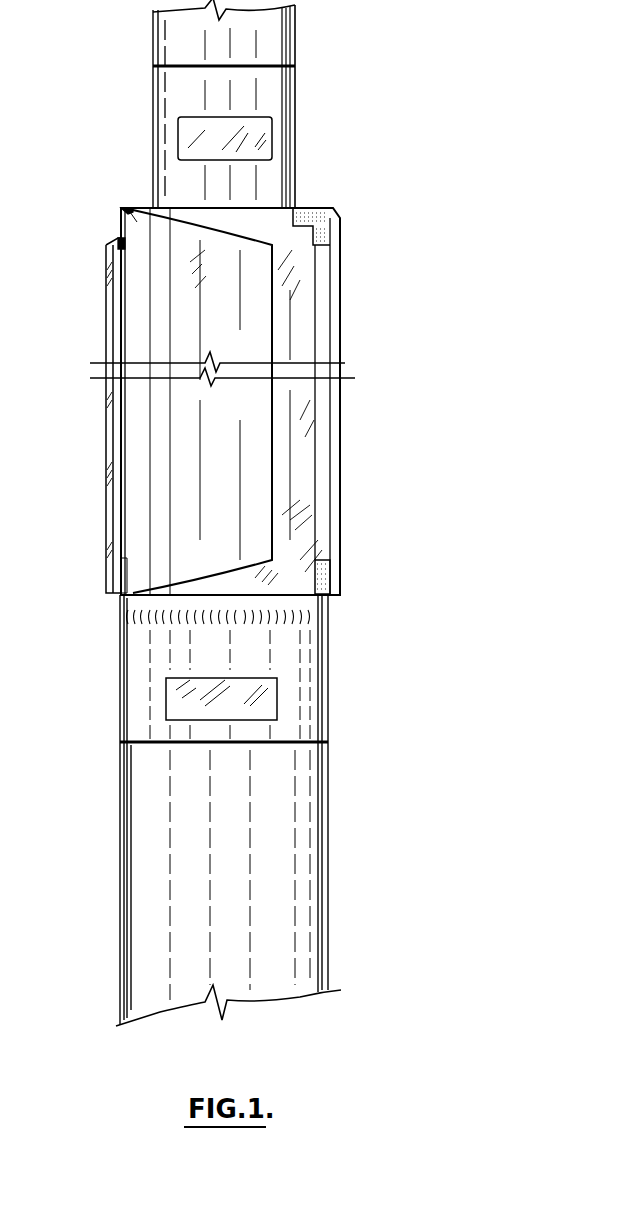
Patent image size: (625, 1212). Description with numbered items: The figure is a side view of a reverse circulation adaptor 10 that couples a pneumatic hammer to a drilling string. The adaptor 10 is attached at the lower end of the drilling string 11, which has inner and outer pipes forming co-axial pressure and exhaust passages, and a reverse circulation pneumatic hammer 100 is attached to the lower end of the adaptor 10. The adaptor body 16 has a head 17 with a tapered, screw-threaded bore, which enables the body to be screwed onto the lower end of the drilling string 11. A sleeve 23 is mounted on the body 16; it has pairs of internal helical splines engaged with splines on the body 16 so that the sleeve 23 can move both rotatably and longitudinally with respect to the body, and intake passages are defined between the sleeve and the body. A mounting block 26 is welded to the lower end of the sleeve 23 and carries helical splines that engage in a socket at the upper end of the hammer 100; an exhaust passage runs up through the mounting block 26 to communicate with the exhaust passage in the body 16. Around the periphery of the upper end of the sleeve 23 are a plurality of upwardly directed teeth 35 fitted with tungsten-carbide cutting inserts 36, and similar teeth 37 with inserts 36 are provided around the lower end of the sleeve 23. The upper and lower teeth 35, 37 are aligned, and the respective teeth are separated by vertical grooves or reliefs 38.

The adaptor 10 is at (443, 374).
The drilling string 11 is at (295, 50).
The adaptor body 16 is at (297, 192).
The head 17 is at (295, 162).
The sleeve 23 is at (343, 293).
The mounting block 26 is at (330, 685).
The upwardly directed teeth 35 is at (133, 218).
The tungsten-carbide cutting inserts 36 is at (120, 212).
The lower teeth 37 is at (343, 584).
The vertical grooves or reliefs 38 is at (296, 490).
The reverse circulation pneumatic hammer 100 is at (330, 862).